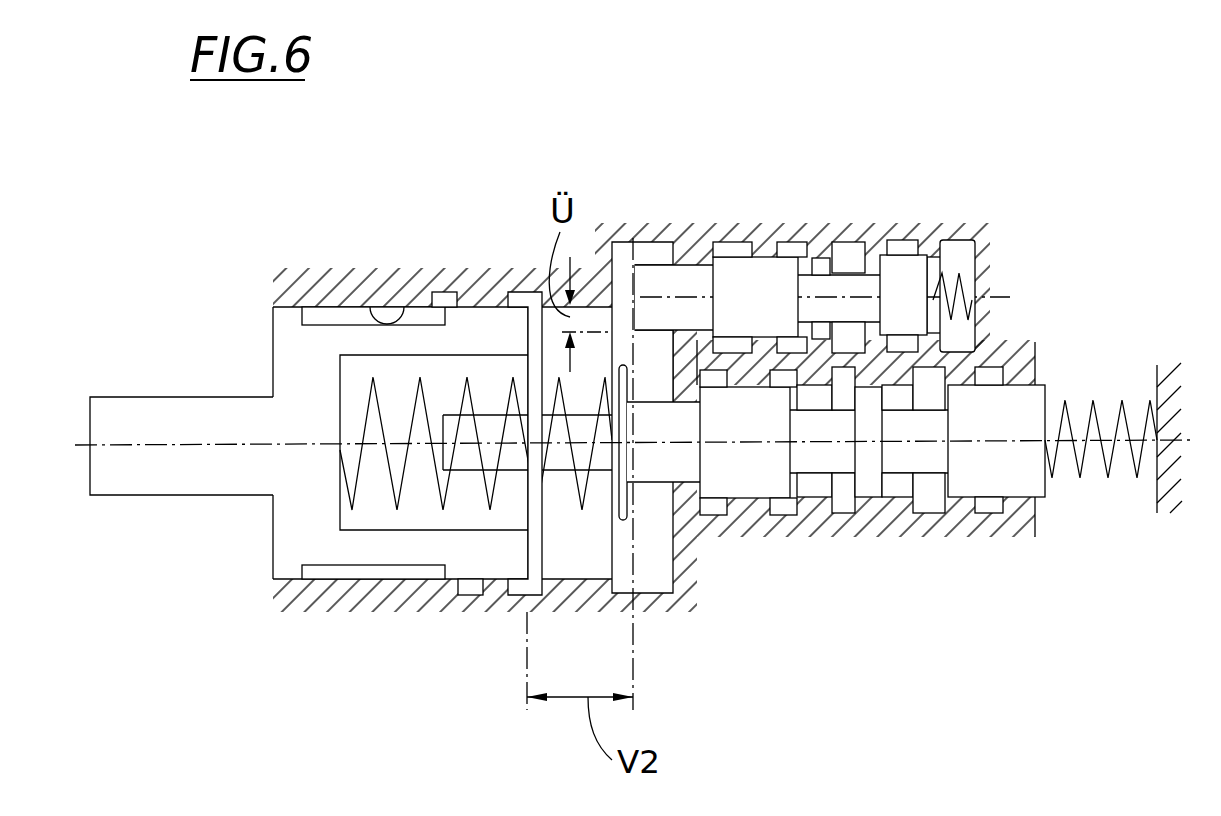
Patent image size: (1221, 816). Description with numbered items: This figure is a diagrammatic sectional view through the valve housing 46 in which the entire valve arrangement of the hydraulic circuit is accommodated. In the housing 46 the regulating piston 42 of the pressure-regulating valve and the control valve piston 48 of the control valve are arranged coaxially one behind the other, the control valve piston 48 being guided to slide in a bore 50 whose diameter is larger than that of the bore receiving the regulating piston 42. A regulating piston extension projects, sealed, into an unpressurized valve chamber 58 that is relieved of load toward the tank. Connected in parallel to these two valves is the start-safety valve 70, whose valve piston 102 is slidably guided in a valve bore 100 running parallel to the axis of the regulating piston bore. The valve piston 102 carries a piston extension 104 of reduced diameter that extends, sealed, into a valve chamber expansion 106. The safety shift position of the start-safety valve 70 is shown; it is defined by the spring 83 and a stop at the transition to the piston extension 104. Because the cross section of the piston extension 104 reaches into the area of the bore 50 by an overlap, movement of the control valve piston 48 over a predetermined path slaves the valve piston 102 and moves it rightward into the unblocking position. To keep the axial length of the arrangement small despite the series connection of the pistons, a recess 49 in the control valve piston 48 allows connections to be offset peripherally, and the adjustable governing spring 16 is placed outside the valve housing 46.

The adjustable governing spring 16 is at (1080, 470).
The regulating piston 42 is at (777, 457).
The valve housing 46 is at (443, 278).
The control valve piston 48 is at (255, 465).
The recess 49 is at (371, 565).
The bore 50 is at (373, 307).
The unpressurized valve chamber 58 is at (588, 562).
The start-safety valve 70 is at (756, 215).
The spring 83 is at (975, 268).
The valve bore 100 is at (852, 250).
The valve piston 102 is at (790, 317).
The piston extension 104 is at (680, 287).
The valve chamber expansion 106 is at (625, 253).